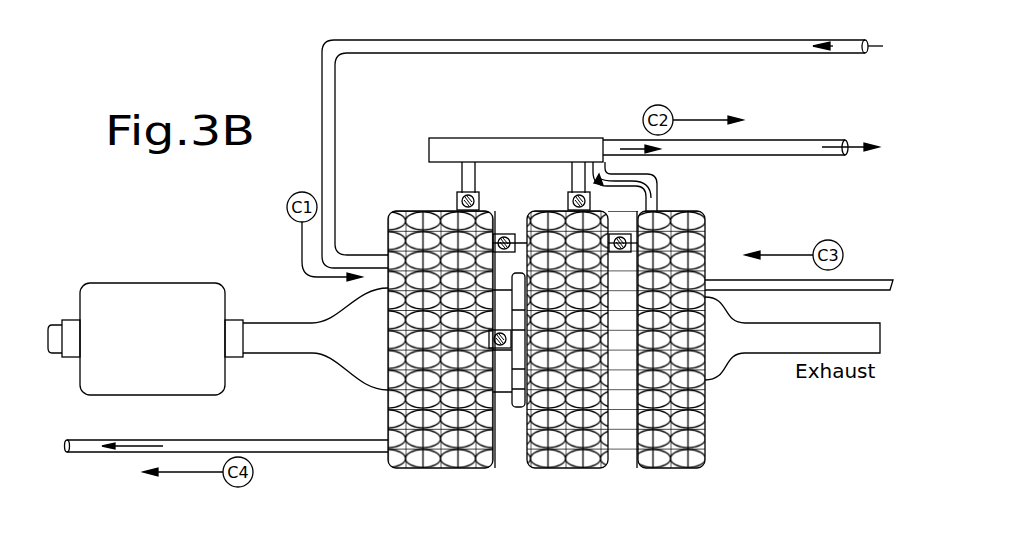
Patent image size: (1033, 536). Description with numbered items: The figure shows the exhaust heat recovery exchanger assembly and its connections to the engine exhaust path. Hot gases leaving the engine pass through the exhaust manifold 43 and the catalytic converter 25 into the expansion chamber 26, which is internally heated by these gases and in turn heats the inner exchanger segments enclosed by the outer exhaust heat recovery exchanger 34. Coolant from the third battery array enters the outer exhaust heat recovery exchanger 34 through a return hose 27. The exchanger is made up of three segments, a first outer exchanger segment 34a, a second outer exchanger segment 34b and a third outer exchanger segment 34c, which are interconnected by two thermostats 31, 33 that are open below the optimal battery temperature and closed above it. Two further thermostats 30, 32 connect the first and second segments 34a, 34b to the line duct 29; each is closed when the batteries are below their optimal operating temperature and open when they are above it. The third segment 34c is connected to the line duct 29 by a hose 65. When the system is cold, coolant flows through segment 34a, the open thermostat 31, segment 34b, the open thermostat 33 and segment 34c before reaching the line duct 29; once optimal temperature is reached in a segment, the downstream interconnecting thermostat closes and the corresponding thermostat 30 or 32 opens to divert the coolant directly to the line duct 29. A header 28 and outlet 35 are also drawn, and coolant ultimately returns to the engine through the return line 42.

The catalytic converter 25 is at (225, 378).
The exhaust manifold 43 is at (56, 325).
The expansion chamber 26 is at (343, 374).
The return hose 27 is at (381, 257).
The distribution manifold 28 is at (543, 137).
The line duct 29 is at (625, 140).
The thermostat 30 is at (458, 195).
The thermostat 31 is at (507, 233).
The thermostat 32 is at (570, 195).
The thermostat 33 is at (622, 233).
The hose 65 is at (660, 190).
The outer exhaust heat recovery exchanger 34 is at (593, 355).
The first outer exchanger segment 34a is at (465, 470).
The second outer exchanger segment 34b is at (597, 472).
The third outer exchanger segment 34c is at (697, 472).
The outlet conduit C3 35 is at (740, 292).
The return line 42 is at (305, 452).